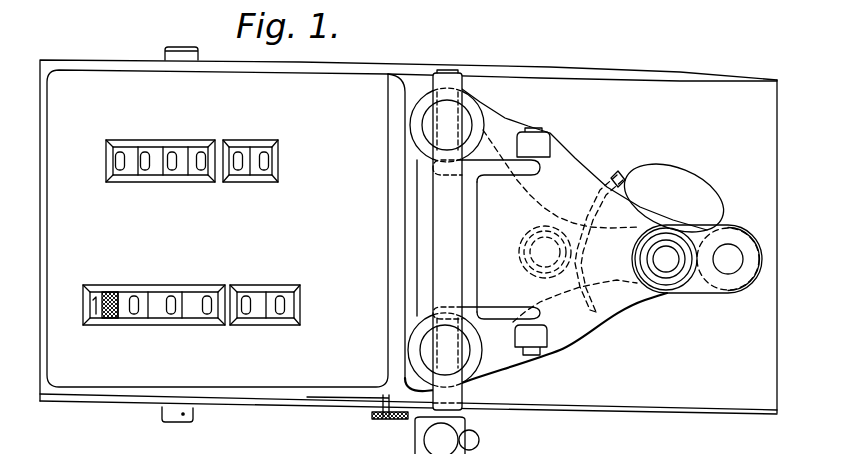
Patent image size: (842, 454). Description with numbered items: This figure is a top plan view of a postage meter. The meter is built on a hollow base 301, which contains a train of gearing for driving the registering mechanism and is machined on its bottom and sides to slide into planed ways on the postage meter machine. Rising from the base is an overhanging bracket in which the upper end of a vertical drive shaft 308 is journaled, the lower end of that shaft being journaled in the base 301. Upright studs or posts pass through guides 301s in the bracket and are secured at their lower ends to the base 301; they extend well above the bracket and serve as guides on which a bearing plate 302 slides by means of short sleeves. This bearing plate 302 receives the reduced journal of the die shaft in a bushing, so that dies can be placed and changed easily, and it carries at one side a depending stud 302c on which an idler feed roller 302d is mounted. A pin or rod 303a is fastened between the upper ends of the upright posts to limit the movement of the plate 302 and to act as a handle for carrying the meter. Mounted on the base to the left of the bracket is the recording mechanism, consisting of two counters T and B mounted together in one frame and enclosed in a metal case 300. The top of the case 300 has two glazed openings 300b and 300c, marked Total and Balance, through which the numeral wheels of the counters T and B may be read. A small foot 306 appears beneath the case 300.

The housing 300 is at (107, 377).
The glazed opening 300b is at (113, 167).
The glazed opening 300c is at (95, 316).
The hollow base 301 is at (743, 397).
The guide 301s is at (533, 275).
The bearing plate 302 is at (557, 322).
The depending stud 302c is at (729, 240).
The idler feed roller 302d is at (740, 293).
The pin 303a is at (497, 441).
The foot 306 is at (205, 426).
The drive shaft 308 is at (538, 243).
The counter T is at (130, 150).
The counter B is at (120, 295).